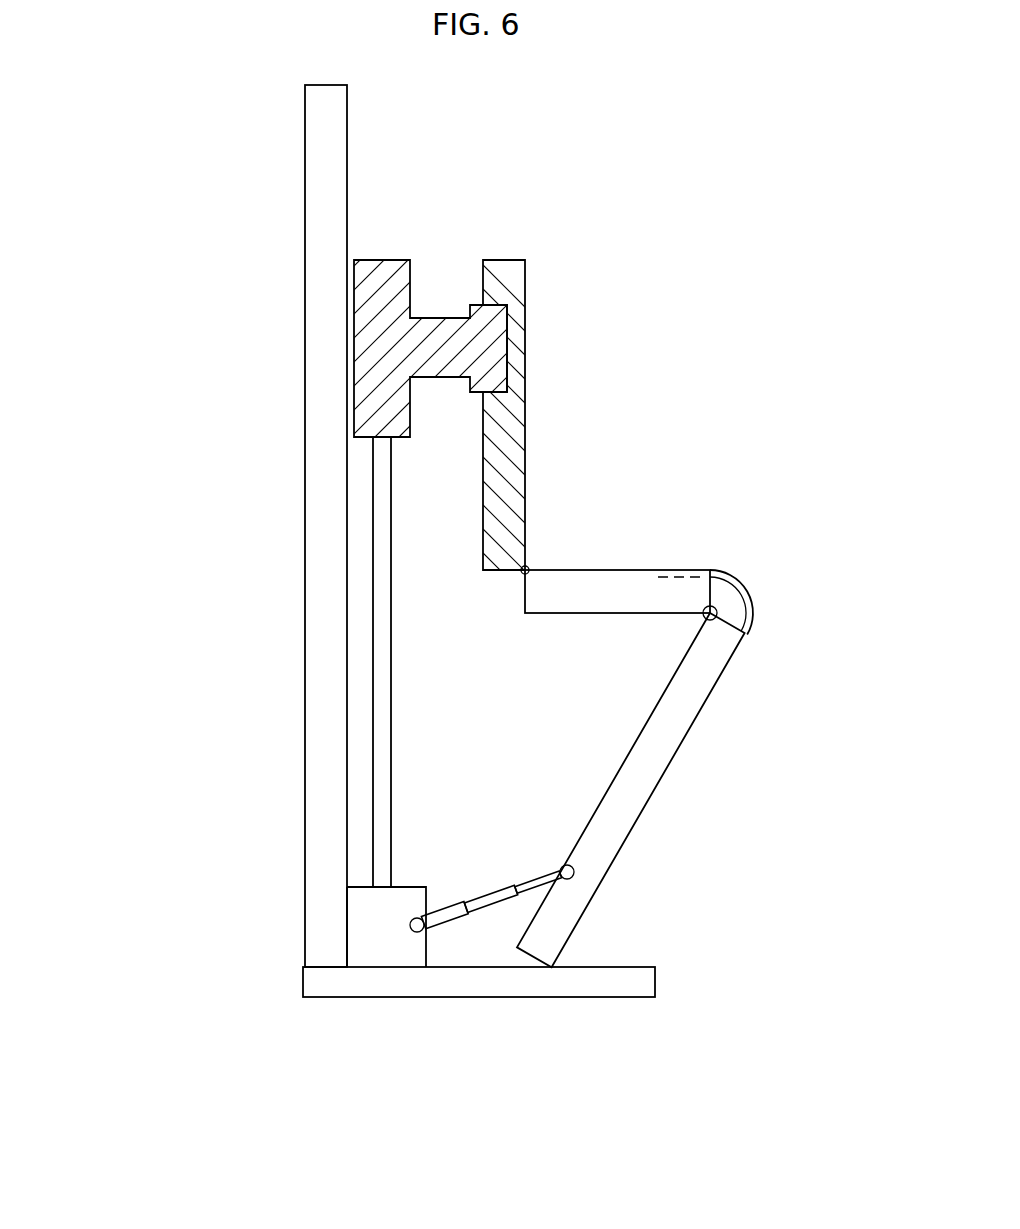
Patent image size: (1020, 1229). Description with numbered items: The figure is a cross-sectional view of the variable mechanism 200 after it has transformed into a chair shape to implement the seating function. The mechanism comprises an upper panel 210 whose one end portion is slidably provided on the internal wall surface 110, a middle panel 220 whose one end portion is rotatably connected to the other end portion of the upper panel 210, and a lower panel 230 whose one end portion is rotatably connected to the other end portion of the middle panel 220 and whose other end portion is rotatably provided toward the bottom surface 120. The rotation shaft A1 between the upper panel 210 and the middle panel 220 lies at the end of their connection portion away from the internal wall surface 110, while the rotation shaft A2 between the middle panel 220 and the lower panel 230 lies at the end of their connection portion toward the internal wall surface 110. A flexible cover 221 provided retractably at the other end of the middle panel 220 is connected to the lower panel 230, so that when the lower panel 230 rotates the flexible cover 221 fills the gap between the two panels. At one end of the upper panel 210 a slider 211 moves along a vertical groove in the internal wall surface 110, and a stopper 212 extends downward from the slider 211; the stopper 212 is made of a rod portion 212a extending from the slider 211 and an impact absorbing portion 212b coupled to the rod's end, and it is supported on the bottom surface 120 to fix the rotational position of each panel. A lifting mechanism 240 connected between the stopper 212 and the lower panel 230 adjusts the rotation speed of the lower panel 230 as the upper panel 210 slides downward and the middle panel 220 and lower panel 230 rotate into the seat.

The internal wall surface 110 is at (322, 388).
The bottom surface 120 is at (420, 985).
The variable mechanism 200 is at (531, 560).
The upper panel 210 is at (525, 420).
The slider 211 is at (393, 257).
The stopper 212 is at (245, 702).
The rod portion 212a is at (385, 792).
The impact absorbing portion 212b is at (370, 920).
The middle panel 220 is at (638, 582).
The flexible cover 221 is at (748, 583).
The lower panel 230 is at (690, 725).
The lifting mechanism 240 is at (488, 903).
The rotation shaft A1 is at (528, 568).
The rotation shaft A2 is at (716, 607).